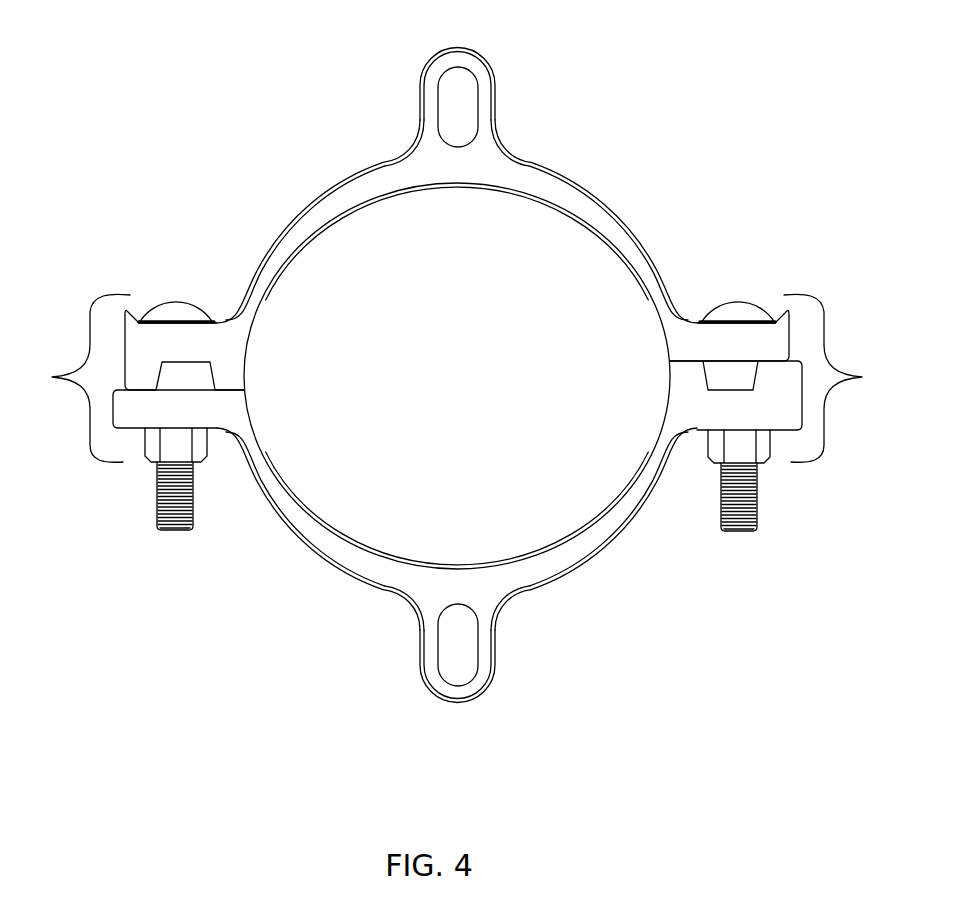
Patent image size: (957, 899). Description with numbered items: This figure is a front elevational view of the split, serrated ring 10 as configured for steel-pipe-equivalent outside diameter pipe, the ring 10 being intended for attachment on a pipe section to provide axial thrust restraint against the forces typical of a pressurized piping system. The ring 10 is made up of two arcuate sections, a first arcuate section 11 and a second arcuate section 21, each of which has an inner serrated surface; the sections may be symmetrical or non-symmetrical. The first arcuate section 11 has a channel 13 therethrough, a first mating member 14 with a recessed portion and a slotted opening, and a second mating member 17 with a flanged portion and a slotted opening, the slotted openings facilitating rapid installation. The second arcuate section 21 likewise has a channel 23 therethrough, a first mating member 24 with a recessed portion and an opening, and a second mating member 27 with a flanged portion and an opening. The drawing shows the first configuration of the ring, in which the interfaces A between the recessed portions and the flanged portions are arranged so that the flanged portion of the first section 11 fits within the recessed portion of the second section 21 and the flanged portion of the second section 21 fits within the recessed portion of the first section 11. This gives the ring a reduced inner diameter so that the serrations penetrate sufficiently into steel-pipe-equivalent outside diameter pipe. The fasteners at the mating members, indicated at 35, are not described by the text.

The split, serrated ring 10 is at (458, 418).
The first arcuate section 11 is at (508, 296).
The channel 13 is at (458, 97).
The first mating member 14 is at (214, 338).
The second mating member 17 is at (700, 343).
The second arcuate section 21 is at (506, 565).
The channel 23 is at (462, 655).
The first mating member 24 is at (698, 393).
The second mating member 27 is at (233, 412).
The fastener bolts 35 is at (182, 527).
The interfaces A is at (458, 378).